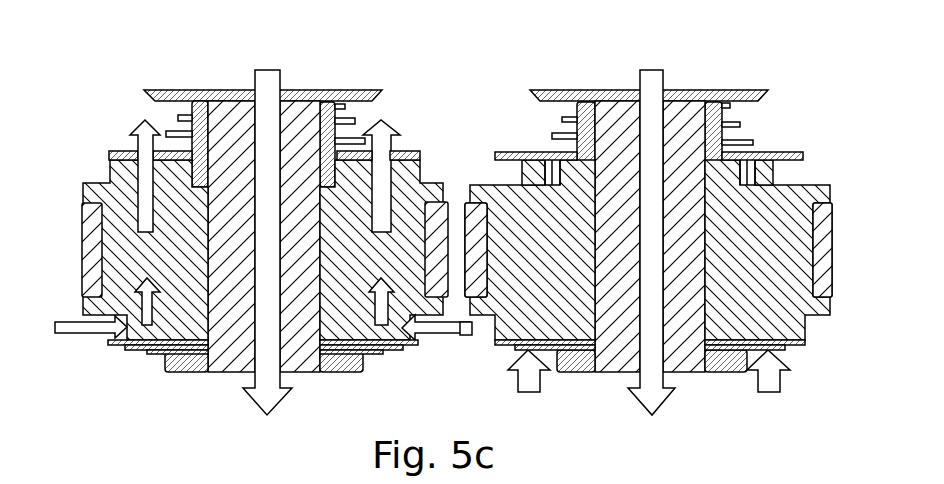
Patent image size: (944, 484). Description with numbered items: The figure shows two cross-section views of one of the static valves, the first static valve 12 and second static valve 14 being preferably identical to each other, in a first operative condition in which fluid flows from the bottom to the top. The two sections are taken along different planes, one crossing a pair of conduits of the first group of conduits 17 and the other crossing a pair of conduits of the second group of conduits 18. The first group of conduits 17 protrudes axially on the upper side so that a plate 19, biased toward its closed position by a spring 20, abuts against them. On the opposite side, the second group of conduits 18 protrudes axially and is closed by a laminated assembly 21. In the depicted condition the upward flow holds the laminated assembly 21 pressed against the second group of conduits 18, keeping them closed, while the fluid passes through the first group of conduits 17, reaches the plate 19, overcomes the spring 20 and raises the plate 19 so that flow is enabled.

The first static valve 12 is at (688, 207).
The second static valve 14 is at (807, 60).
The first group of conduits 17 is at (138, 253).
The second group of conduits 18 is at (523, 308).
The plate 19 is at (398, 151).
The spring 20 is at (347, 110).
The laminated assembly 21 is at (122, 345).